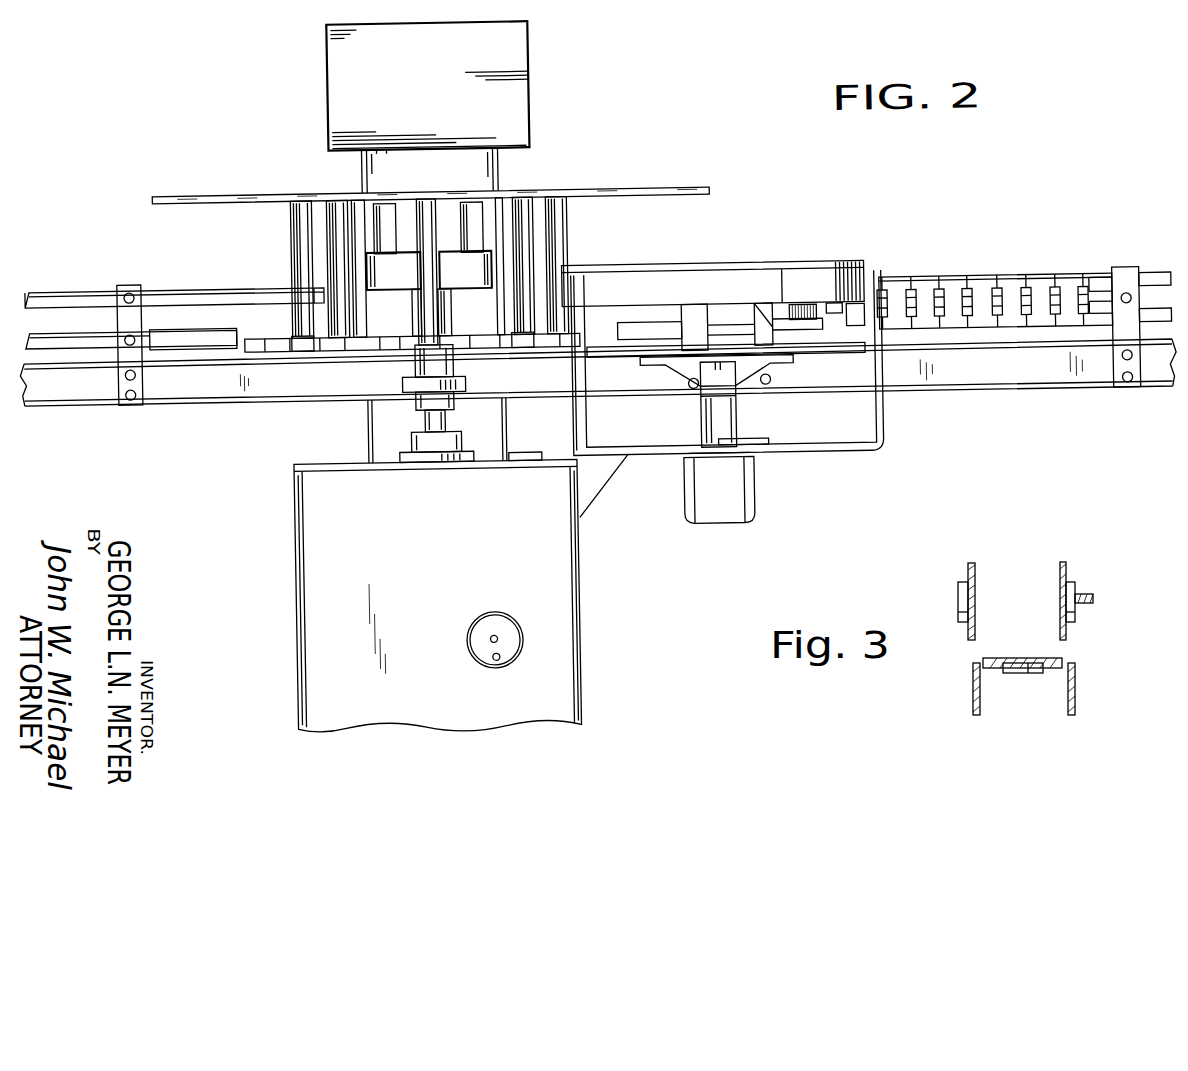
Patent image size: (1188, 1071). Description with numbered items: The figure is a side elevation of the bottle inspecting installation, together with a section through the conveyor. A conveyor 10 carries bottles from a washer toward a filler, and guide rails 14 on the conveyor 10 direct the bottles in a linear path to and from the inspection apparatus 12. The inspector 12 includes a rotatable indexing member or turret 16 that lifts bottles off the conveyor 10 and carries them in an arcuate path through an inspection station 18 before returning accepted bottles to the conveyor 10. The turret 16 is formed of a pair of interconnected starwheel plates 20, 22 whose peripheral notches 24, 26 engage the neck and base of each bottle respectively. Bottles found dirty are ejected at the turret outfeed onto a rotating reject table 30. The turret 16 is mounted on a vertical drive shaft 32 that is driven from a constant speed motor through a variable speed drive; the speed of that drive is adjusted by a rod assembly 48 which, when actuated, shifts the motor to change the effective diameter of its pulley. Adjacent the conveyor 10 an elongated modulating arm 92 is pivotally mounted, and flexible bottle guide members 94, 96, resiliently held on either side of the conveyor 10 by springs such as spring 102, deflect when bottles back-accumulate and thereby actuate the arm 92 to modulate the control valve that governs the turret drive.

In FIG. 2, the conveyor 10 is at (83, 366).
In FIG. 3, the conveyor 10 is at (1018, 658).
In FIG. 2, the inspection apparatus 12 is at (515, 50).
In FIG. 2, the guide rails 14 is at (58, 330).
In FIG. 2, the turret 16 is at (315, 185).
In FIG. 2, the inspection station 18 is at (433, 182).
In FIG. 2, the starwheel plate 20 is at (551, 189).
In FIG. 2, the starwheel plate 22 is at (278, 342).
In FIG. 2, the peripheral notches 24 is at (265, 189).
In FIG. 2, the peripheral notches 26 is at (303, 338).
In FIG. 2, the reject table 30 is at (632, 356).
In FIG. 2, the vertical drive shaft 32 is at (431, 417).
In FIG. 2, the rod assembly 48 is at (490, 637).
In FIG. 3, the modulating arm 92 is at (1090, 605).
In FIG. 3, the flexible bottle guide member 94 is at (1066, 575).
In FIG. 2, the flexible bottle guide member 96 is at (981, 285).
In FIG. 3, the flexible bottle guide member 96 is at (957, 597).
In FIG. 2, the spring 102 is at (801, 313).